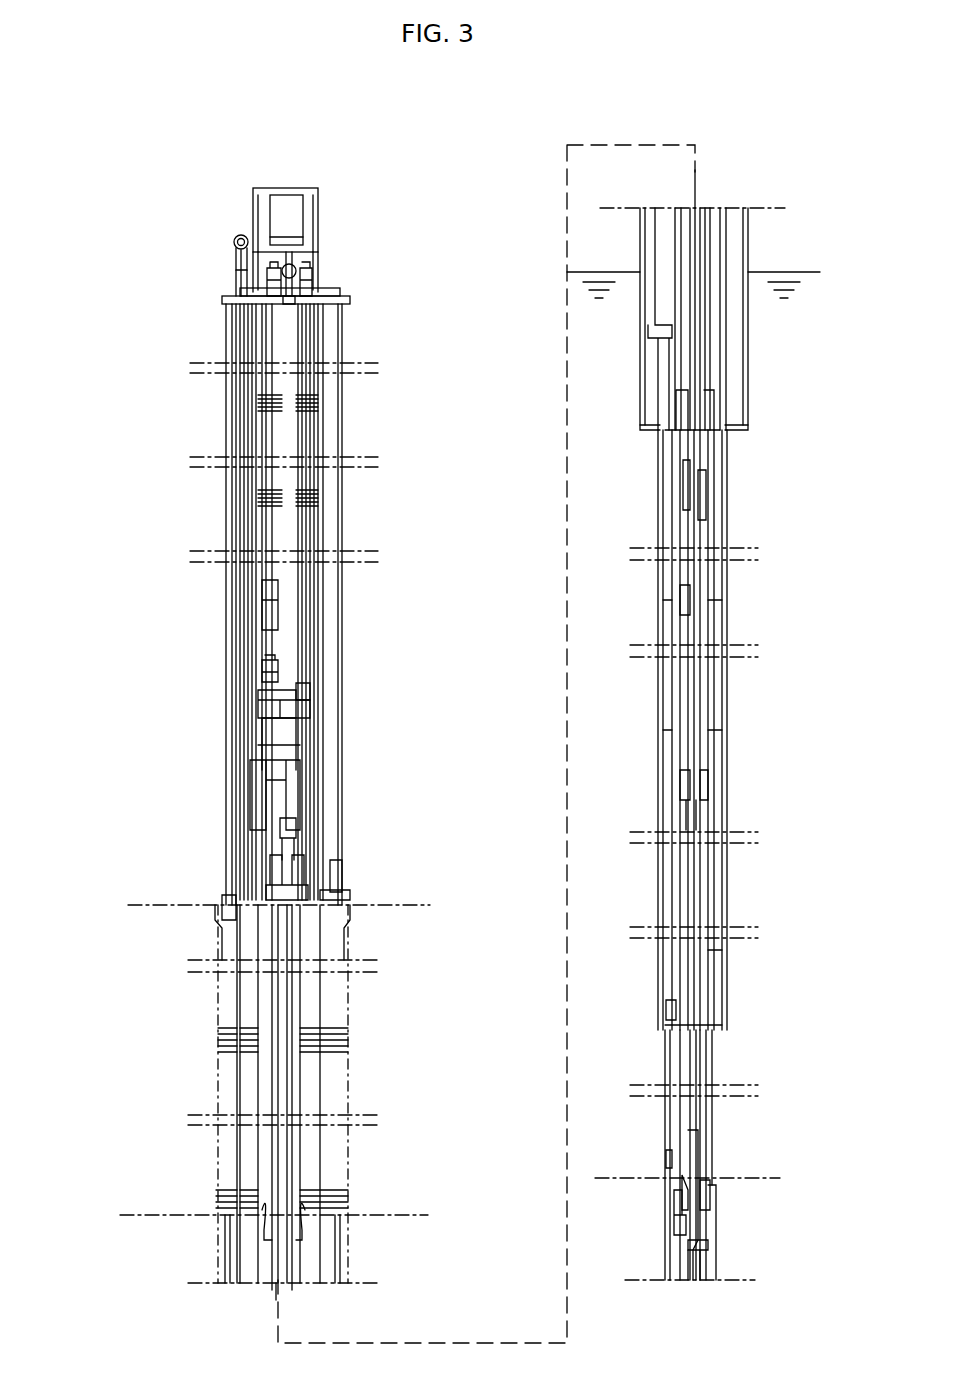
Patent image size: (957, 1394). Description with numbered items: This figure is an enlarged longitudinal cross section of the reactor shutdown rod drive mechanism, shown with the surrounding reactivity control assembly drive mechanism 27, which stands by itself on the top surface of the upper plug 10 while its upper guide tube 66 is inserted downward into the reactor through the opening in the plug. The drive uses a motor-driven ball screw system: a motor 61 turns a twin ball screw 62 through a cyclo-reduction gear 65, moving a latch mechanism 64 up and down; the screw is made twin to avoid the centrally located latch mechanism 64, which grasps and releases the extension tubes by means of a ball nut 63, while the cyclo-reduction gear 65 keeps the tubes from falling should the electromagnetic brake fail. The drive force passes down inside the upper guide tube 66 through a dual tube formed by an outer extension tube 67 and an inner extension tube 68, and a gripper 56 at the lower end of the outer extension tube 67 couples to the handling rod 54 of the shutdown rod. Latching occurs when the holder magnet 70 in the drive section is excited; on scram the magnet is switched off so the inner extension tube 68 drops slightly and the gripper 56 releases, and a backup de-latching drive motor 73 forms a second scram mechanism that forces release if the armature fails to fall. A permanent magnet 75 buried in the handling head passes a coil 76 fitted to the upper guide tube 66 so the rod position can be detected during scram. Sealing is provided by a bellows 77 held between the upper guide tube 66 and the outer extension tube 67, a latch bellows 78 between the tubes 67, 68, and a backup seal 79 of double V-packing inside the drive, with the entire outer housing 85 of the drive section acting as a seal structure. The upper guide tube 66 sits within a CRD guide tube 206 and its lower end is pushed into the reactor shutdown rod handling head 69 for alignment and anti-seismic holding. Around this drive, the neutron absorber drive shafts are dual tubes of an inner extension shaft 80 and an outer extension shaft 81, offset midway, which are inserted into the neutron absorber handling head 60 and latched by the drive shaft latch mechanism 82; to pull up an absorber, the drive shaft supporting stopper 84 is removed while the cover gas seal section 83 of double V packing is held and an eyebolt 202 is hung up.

The reactivity control assembly drive mechanism 27 is at (102, 302).
The eyebolt 202 is at (242, 235).
The motor 61 is at (300, 212).
The cyclo-reduction gear 65 is at (296, 240).
The drive shaft supporting stopper 84 is at (236, 300).
The outer housing 85 is at (343, 508).
The inner extension shaft 80 is at (243, 633).
The backup de-latching drive motor 73 is at (268, 670).
The outer extension shaft 81 is at (243, 732).
The twin ball screw 62 is at (302, 624).
The ball nut 63 is at (304, 690).
The holder magnet 70 is at (290, 710).
The latch mechanism 64 is at (288, 826).
The backup seal 79 is at (296, 870).
The cover gas seal section 83 is at (230, 910).
The upper plug 10 is at (393, 896).
The upper guide tube 66 is at (300, 1003).
The CRD guide tube 206 is at (735, 468).
The bellows 77 is at (712, 597).
The latch bellows 78 is at (703, 784).
The outer extension tube 67 is at (710, 954).
The inner extension tube 68 is at (692, 976).
The drive shaft latch mechanism 82 is at (665, 1160).
The handling head 60 is at (662, 1168).
The coil 76 is at (710, 1142).
The reactor shutdown rod handling head 69 is at (722, 1202).
The gripper 56 is at (698, 1222).
The permanent magnet 75 is at (696, 1244).
The handling rod 54 is at (692, 1268).